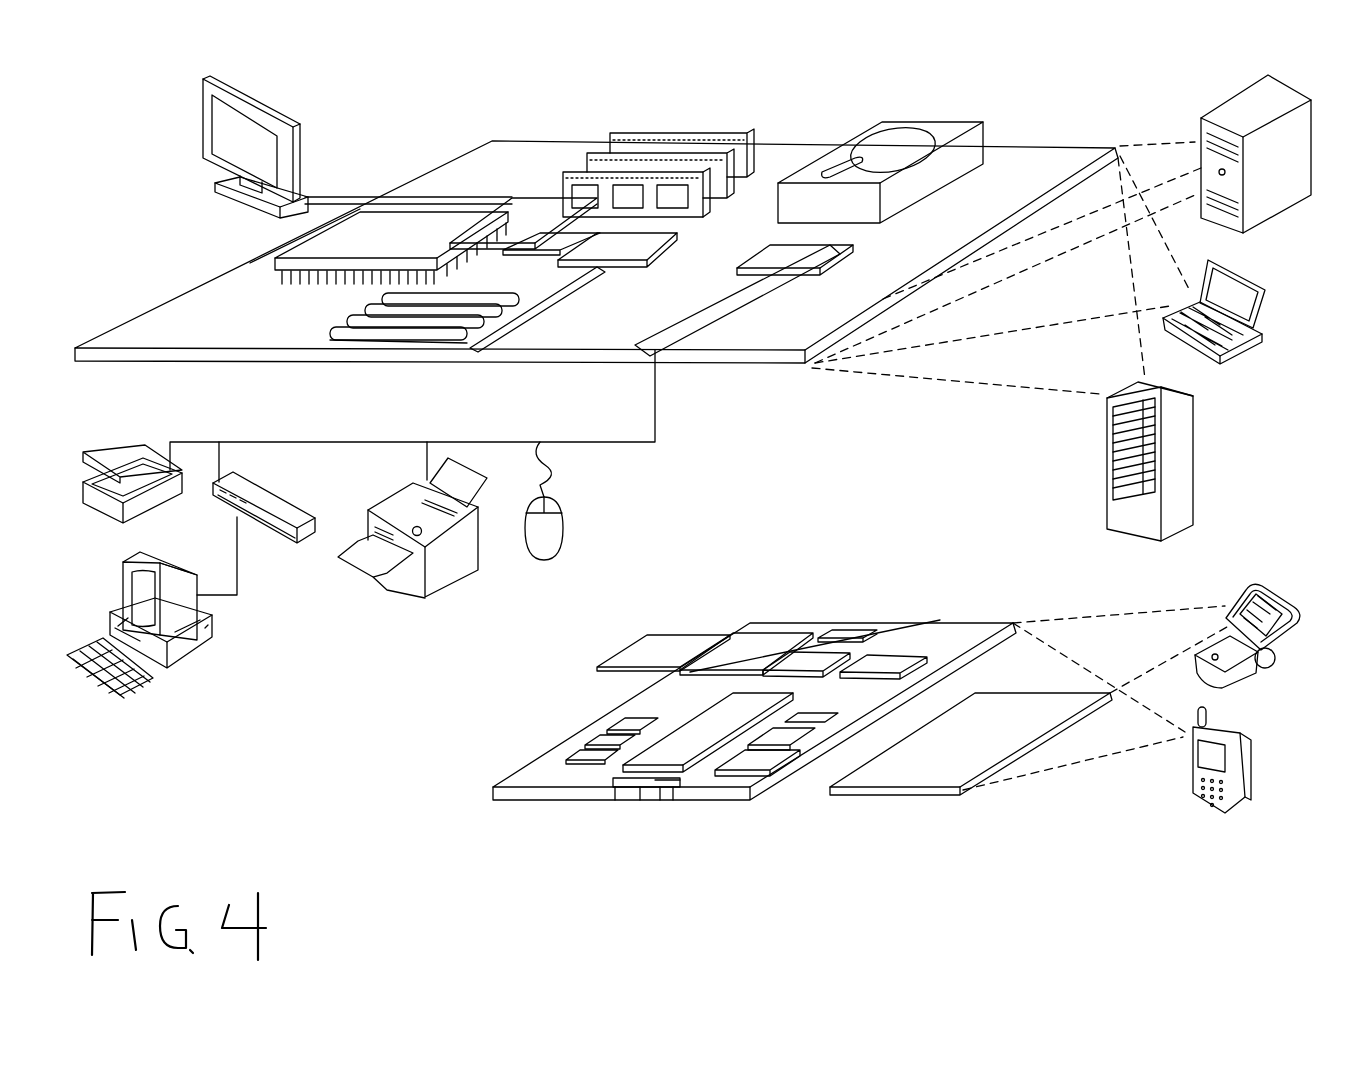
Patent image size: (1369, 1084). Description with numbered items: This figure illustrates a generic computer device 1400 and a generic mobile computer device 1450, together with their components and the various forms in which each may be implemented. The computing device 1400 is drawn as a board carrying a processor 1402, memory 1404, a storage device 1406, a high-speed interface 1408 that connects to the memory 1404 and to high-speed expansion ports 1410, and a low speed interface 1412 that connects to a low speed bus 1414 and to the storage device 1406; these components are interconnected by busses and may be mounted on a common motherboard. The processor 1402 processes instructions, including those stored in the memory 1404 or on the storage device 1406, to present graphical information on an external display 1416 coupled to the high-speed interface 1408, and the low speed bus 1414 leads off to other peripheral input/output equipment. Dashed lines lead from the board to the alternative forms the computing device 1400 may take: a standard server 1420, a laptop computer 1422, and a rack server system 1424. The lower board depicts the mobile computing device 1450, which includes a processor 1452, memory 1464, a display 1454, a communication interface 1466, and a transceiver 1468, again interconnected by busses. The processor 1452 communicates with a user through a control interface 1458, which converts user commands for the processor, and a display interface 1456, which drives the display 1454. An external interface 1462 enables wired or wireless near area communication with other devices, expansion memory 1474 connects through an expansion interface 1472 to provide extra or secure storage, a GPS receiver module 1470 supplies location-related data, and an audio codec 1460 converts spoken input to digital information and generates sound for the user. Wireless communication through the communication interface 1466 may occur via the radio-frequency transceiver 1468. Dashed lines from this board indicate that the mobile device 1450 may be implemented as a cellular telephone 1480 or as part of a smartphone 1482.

The computing device 1400 is at (410, 110).
The processor 1402 is at (247, 262).
The memory 1404 is at (628, 133).
The storage device 1406 is at (870, 122).
The high-speed interface 1408 is at (527, 200).
The high-speed expansion ports 1410 is at (360, 318).
The low speed interface 1412 is at (773, 245).
The low speed bus 1414 is at (692, 358).
The display 1416 is at (207, 78).
The standard server 1420 is at (1200, 126).
The laptop computer 1422 is at (1278, 285).
The rack server system 1424 is at (1106, 487).
The mobile computer device 1450 is at (468, 795).
The processor 1452 is at (676, 803).
The display 1454 is at (940, 790).
The display interface 1456 is at (752, 768).
The control interface 1458 is at (800, 752).
The audio codec 1460 is at (814, 712).
The external interface 1462 is at (640, 800).
The memory 1464 is at (592, 745).
The communication interface 1466 is at (800, 652).
The transceiver 1468 is at (888, 655).
The GPS receiver module 1470 is at (855, 628).
The expansion interface 1472 is at (713, 634).
The expansion memory 1474 is at (648, 636).
The cellular telephone 1480 is at (1250, 584).
The smartphone 1482 is at (1193, 773).